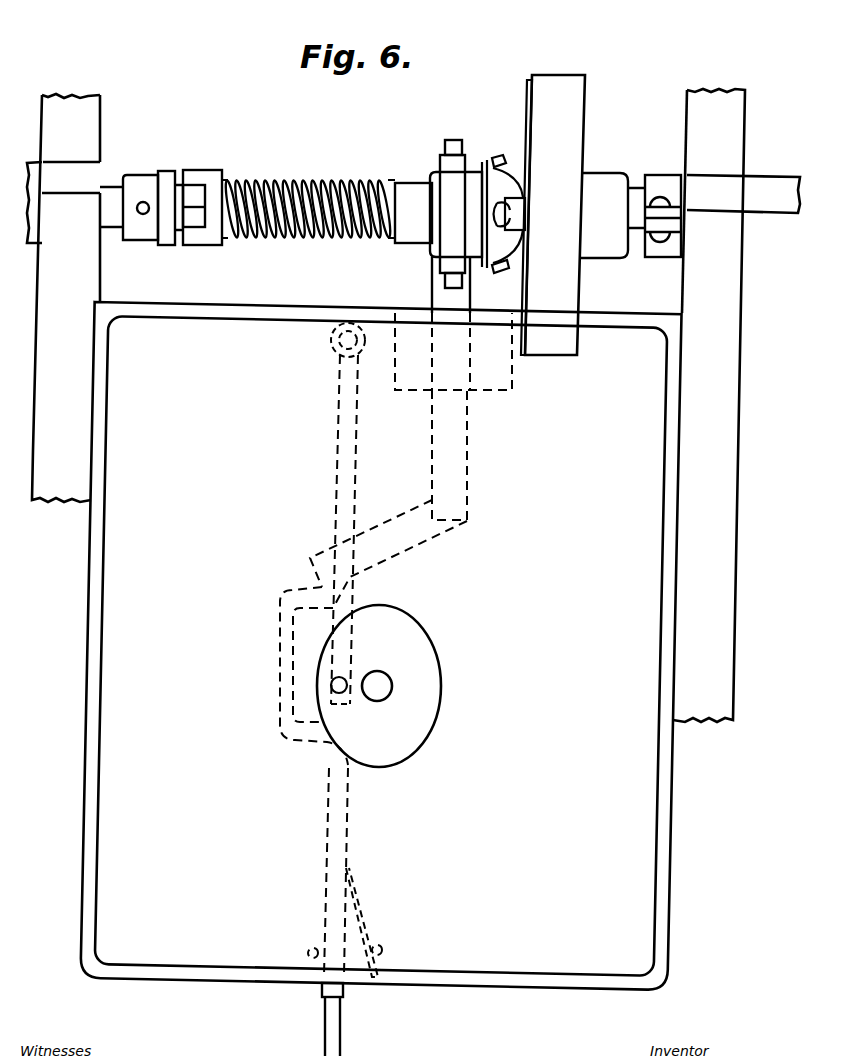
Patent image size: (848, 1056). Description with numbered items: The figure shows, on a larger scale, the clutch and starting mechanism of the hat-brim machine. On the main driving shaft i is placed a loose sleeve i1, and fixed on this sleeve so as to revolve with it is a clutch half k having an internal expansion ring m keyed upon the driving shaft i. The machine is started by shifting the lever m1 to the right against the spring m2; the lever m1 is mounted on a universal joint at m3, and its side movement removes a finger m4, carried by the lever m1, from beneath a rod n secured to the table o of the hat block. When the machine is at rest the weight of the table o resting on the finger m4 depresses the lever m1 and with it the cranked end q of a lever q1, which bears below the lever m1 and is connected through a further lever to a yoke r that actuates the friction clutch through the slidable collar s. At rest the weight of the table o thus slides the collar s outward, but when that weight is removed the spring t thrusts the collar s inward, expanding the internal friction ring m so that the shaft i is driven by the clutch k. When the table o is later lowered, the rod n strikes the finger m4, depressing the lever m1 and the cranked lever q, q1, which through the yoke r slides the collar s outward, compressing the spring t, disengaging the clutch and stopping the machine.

The main driving shaft i is at (112, 187).
The loose sleeve i1 is at (639, 236).
The spring t is at (296, 186).
The slidable collar s is at (414, 236).
The yoke r is at (450, 166).
The internal expansion ring m is at (530, 100).
The clutch half k is at (575, 109).
The lever m1 is at (325, 1017).
The spring m2 is at (366, 918).
The universal joint m3 is at (332, 342).
The finger m4 is at (352, 632).
The rod n is at (336, 686).
The table o is at (428, 704).
The cranked end q is at (410, 520).
The lever q1 is at (462, 434).